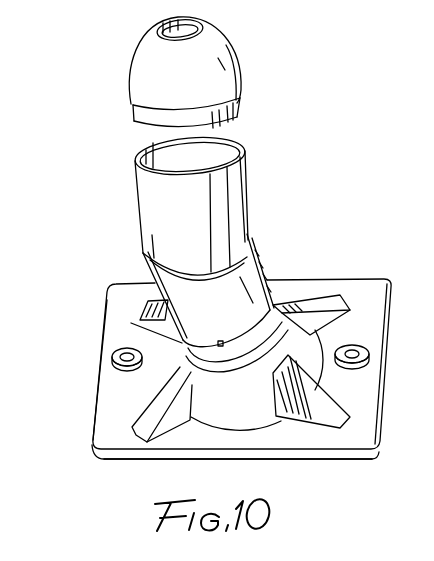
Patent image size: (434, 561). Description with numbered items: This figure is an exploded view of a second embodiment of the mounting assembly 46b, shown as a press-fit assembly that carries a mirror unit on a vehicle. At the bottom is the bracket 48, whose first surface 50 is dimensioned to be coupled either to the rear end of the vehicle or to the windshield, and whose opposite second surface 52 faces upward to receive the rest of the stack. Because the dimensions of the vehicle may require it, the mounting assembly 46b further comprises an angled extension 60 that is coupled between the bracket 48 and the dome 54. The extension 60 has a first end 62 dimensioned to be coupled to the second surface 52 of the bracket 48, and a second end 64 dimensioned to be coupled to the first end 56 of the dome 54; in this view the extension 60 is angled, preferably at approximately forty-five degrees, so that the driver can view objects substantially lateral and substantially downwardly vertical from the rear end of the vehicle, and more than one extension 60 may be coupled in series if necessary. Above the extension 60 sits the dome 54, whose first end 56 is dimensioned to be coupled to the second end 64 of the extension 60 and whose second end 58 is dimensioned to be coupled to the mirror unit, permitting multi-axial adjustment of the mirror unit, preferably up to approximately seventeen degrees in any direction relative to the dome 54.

The mounting assembly 46b is at (97, 302).
The bracket 48 is at (82, 419).
The first surface 50 is at (128, 460).
The second surface 52 is at (281, 315).
The dome 54 is at (192, 88).
The first end 56 is at (241, 103).
The second end 58 is at (231, 50).
The extension 60 is at (193, 229).
The first end 62 is at (272, 307).
The second end 64 is at (246, 152).